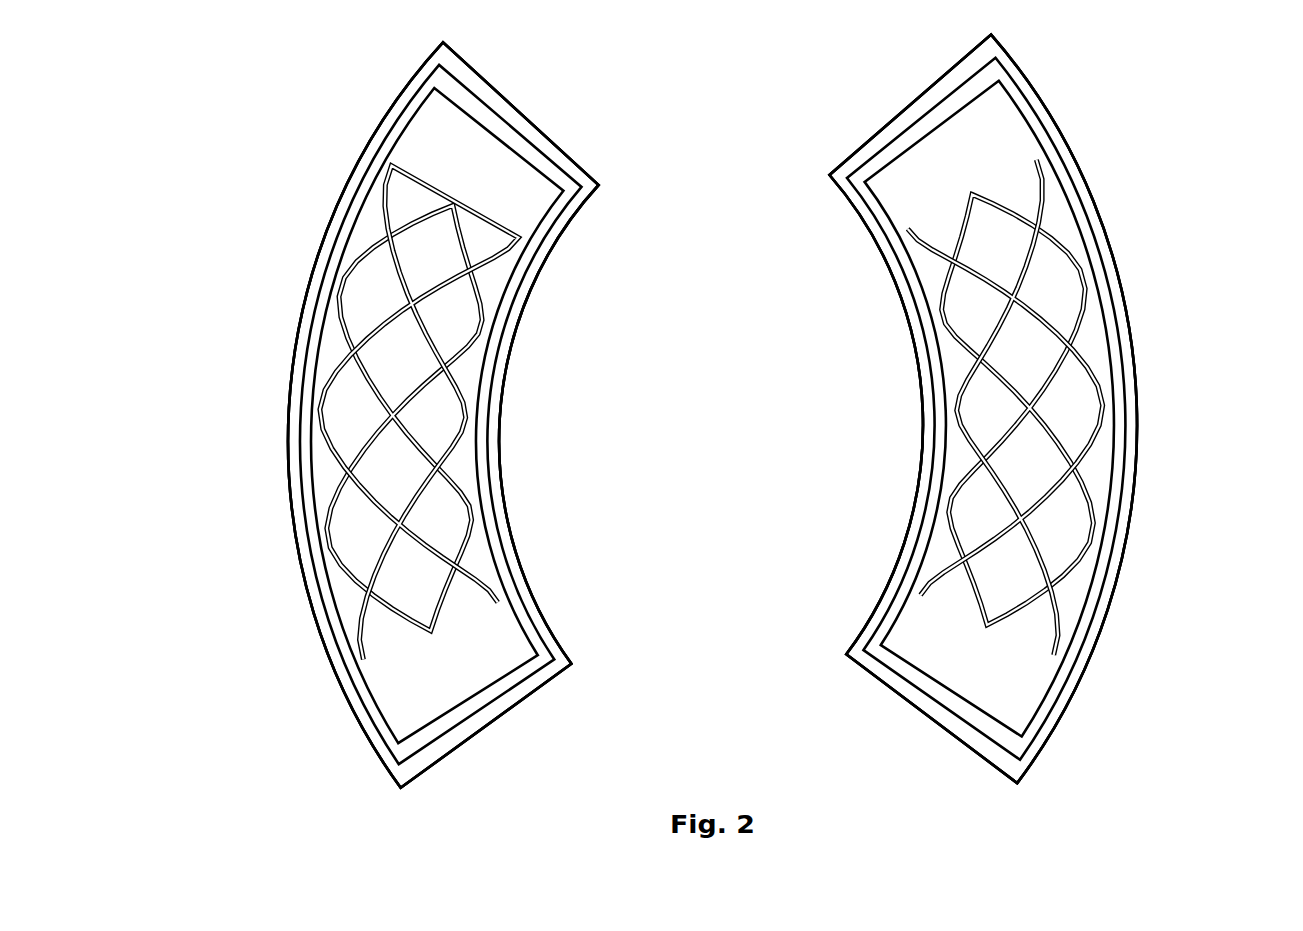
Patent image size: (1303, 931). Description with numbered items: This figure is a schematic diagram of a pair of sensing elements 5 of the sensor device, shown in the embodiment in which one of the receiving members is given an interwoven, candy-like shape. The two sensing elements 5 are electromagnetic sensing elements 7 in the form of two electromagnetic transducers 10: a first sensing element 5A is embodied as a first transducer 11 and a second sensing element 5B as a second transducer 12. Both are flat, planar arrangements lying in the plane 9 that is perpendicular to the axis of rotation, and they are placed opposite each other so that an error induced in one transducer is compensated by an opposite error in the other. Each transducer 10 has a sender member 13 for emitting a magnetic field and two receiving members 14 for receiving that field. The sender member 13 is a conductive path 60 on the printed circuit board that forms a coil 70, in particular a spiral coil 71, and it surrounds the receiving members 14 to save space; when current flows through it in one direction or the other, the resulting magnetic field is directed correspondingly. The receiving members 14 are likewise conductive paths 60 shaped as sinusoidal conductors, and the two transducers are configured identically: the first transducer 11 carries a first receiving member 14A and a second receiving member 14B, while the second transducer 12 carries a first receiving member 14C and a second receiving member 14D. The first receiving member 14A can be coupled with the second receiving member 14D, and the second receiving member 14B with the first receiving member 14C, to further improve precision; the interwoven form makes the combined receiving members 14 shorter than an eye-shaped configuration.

The plane 9 is at (720, 78).
The electromagnetic transducer 10 is at (701, 411).
The first transducer 11 is at (1165, 266).
The second transducer 12 is at (234, 178).
The sender member 13 is at (368, 158).
The receiving member 14 is at (690, 405).
The first receiving member 14A is at (1046, 180).
The second receiving member 14B is at (1052, 230).
The first receiving member 14C is at (352, 625).
The second receiving member 14D is at (329, 507).
The sensing element 5 is at (568, 493).
The first sensing element 5A is at (984, 409).
The second sensing element 5B is at (443, 414).
The electromagnetic sensing element 7 is at (553, 552).
The conductive path 60 is at (474, 418).
The coil 70 is at (305, 299).
The spiral coil 71 is at (568, 227).